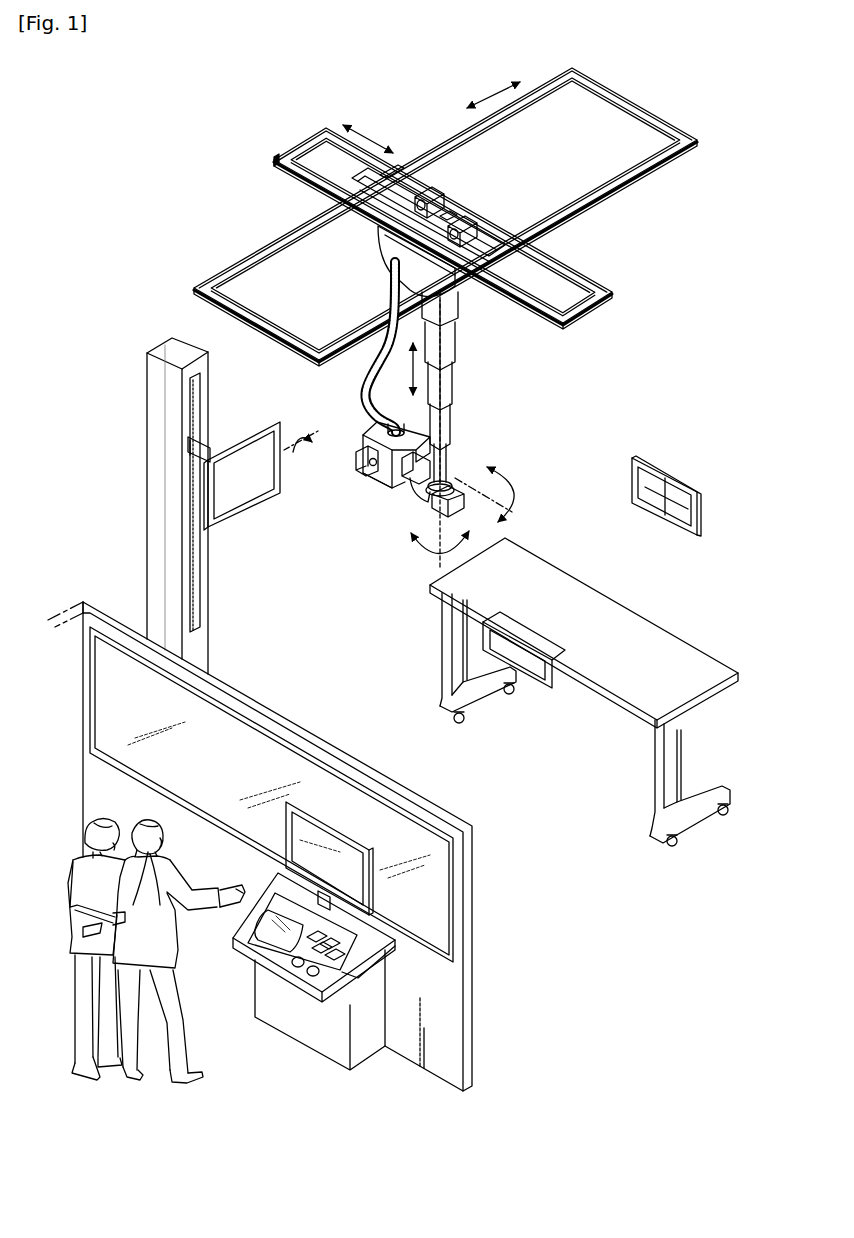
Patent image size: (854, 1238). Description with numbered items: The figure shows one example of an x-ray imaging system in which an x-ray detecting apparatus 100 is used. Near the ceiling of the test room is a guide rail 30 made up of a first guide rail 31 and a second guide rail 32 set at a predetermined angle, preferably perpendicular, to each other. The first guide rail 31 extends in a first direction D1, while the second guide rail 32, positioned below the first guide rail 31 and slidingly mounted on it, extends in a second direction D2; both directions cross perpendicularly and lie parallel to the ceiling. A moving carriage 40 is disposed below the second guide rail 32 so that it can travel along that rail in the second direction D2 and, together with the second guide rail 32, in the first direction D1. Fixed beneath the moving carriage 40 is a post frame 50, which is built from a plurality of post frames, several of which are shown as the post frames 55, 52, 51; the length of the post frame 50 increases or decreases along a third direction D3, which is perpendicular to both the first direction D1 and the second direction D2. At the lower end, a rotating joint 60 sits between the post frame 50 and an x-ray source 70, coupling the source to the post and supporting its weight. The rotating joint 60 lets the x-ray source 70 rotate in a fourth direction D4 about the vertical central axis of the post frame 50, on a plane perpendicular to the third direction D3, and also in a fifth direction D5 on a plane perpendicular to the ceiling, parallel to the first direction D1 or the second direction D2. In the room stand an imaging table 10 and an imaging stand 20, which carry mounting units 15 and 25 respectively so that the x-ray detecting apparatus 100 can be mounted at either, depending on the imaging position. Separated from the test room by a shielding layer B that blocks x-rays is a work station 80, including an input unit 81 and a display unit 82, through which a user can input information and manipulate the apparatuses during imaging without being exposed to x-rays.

The imaging table 10 is at (571, 692).
The mounting unit 15 is at (481, 634).
The imaging stand 20 is at (203, 504).
The mounting unit 25 is at (210, 530).
The guide rail 30 is at (445, 217).
The first guide rail 31 is at (572, 217).
The second guide rail 32 is at (578, 273).
The moving carriage 40 is at (390, 247).
The post frame 50 is at (476, 429).
The post frame 51 is at (462, 461).
The post frame 52 is at (452, 352).
The post frame 55 is at (452, 309).
The rotating joint 60 is at (428, 505).
The x-ray source 70 is at (358, 491).
The work station 80 is at (325, 936).
The input unit 81 is at (350, 950).
The display unit 82 is at (371, 887).
The x-ray detecting apparatus 100 is at (707, 493).
The shielding layer B is at (455, 814).
The first direction D1 is at (493, 91).
The second direction D2 is at (368, 133).
The third direction D3 is at (398, 369).
The fourth direction D4 is at (437, 553).
The fifth direction D5 is at (496, 494).